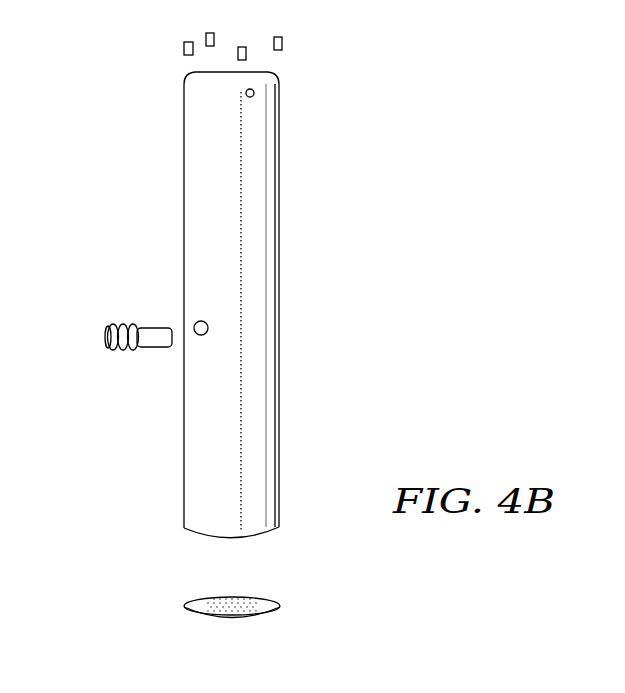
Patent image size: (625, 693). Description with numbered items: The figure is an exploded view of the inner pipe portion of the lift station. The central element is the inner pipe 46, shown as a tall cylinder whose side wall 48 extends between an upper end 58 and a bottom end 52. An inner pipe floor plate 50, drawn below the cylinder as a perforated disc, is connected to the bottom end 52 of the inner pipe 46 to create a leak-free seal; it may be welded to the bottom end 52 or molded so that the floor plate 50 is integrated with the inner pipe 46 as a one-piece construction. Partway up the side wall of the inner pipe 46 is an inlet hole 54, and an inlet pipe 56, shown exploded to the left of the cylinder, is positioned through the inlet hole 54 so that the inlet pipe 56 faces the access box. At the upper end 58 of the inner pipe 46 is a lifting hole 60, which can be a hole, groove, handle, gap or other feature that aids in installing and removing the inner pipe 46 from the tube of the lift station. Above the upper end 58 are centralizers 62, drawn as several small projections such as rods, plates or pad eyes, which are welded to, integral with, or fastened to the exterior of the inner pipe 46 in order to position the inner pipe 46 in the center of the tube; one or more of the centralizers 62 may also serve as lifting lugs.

The centralizers 62 is at (275, 37).
The inner pipe 46 is at (183, 465).
The canister sidewall 48 is at (202, 167).
The upper end 58 is at (279, 80).
The lifting hole 60 is at (256, 95).
The inlet hole 54 is at (211, 327).
The inlet pipe 56 is at (106, 333).
The bottom end 52 is at (183, 527).
The inner pipe floor plate 50 is at (183, 610).